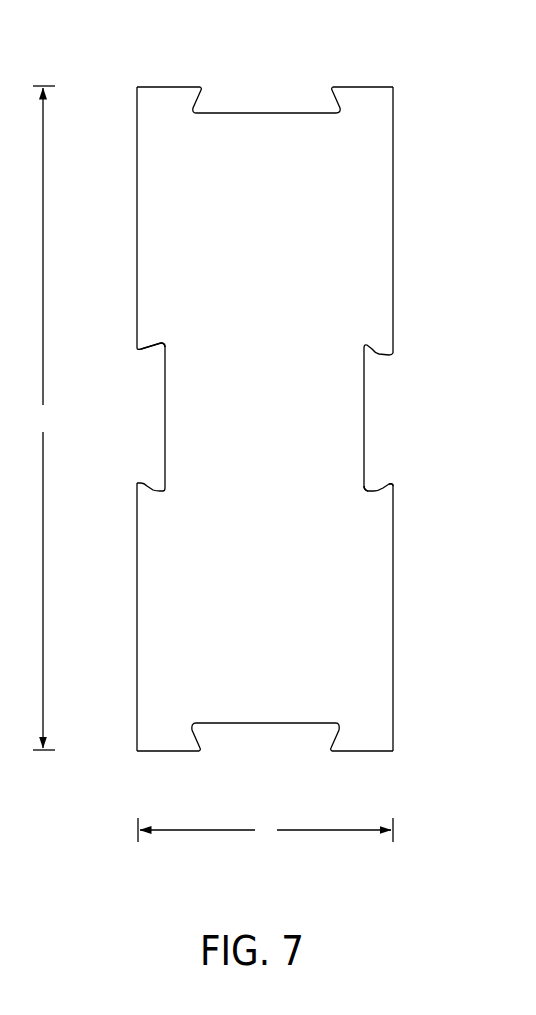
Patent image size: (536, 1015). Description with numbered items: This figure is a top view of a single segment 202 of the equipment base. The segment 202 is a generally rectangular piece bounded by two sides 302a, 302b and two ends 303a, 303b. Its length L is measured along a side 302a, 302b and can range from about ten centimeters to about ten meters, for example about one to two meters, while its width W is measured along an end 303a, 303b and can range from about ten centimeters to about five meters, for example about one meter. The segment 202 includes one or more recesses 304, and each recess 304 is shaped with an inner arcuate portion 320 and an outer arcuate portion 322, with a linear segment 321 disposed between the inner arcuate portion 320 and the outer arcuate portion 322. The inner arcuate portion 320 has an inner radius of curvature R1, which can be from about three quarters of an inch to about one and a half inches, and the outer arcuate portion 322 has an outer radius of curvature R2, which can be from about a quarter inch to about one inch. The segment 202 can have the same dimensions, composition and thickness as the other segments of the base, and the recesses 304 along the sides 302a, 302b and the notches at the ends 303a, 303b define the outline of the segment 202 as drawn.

The segment 202 is at (268, 420).
The side 302a is at (135, 220).
The side 302b is at (393, 220).
The end 303a is at (362, 87).
The end 303b is at (340, 751).
The recess 304 is at (365, 413).
The inner arcuate portion 320 is at (164, 340).
The linear segment 321 is at (145, 343).
The outer arcuate portion 322 is at (130, 353).
The inner radius of curvature R1 is at (366, 488).
The outer radius of curvature R2 is at (393, 486).
The length L is at (44, 418).
The width W is at (265, 830).